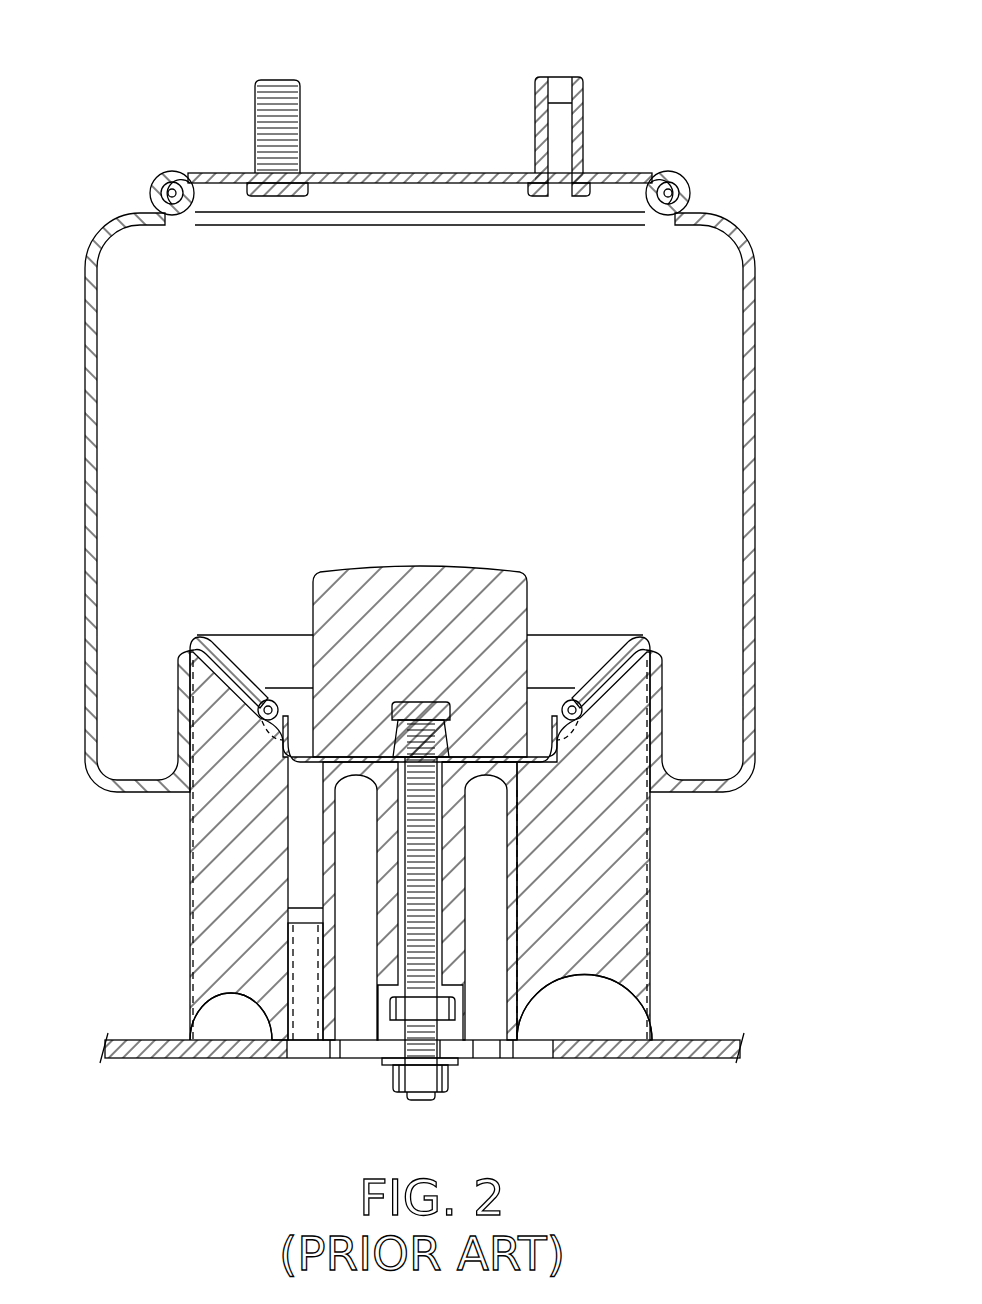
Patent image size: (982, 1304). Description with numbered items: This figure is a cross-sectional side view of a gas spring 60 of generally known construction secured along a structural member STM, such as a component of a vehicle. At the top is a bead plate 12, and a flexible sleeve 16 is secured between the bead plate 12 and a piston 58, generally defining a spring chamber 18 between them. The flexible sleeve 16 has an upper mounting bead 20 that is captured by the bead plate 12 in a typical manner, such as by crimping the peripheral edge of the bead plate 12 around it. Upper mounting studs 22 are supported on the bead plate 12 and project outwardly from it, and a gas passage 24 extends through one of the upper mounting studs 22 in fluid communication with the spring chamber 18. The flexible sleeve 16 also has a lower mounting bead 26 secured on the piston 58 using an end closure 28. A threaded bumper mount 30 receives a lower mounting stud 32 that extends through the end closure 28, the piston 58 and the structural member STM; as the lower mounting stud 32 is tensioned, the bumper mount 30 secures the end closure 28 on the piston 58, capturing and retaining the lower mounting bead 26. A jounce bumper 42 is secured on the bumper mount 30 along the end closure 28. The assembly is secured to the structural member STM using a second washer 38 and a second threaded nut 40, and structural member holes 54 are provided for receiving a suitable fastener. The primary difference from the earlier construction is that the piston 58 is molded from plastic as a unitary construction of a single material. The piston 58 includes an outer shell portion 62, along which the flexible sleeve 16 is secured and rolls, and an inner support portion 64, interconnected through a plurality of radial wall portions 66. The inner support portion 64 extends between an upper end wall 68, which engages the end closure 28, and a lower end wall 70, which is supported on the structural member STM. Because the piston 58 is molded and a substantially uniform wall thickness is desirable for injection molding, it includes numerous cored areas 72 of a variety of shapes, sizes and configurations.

The bead plate 12 is at (381, 166).
The flexible sleeve 16 is at (768, 492).
The spring chamber 18 is at (428, 392).
The upper mounting bead 20 is at (176, 182).
The upper mounting studs 22 is at (420, 101).
The gas passage 24 is at (565, 76).
The lower mounting bead 26 is at (583, 712).
The end closure 28 is at (286, 674).
The threaded bumper mount 30 is at (443, 687).
The lower mounting stud 32 is at (418, 902).
The second washer 38 is at (449, 1068).
The second threaded nut 40 is at (446, 1012).
The jounce bumper 42 is at (456, 553).
The structural member holes 54 is at (298, 1058).
The piston 58 is at (676, 875).
The gas spring 60 is at (766, 186).
The outer shell portion 62 is at (186, 948).
The inner support portion 64 is at (480, 925).
The radial wall portions 66 is at (210, 895).
The upper end wall 68 is at (358, 768).
The lower end wall 70 is at (333, 1052).
The cored areas 72 is at (300, 835).
The structural member STM is at (422, 1079).